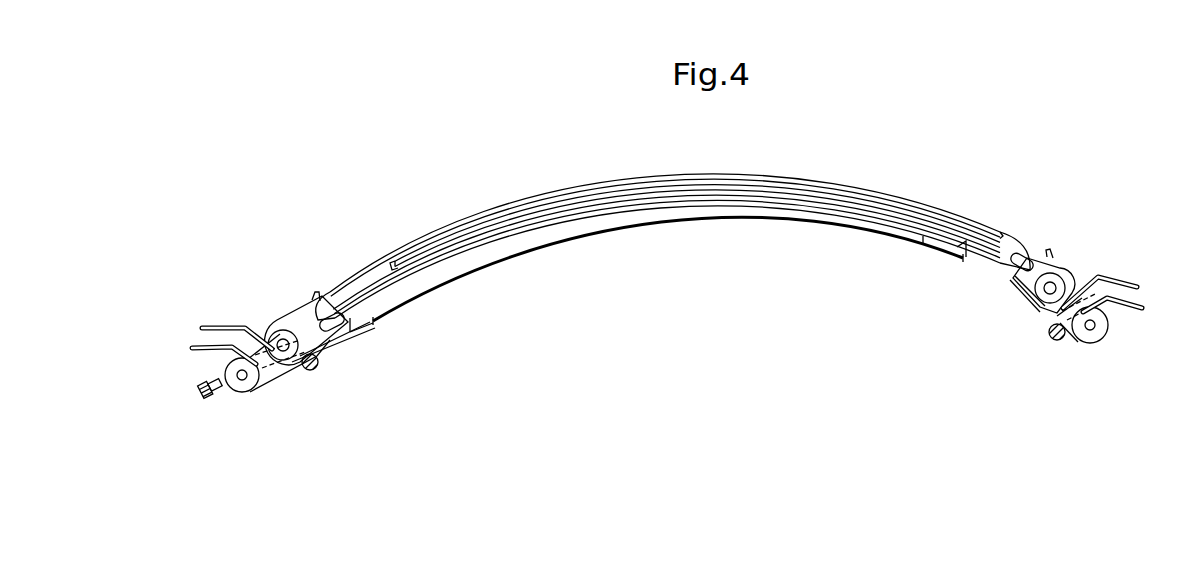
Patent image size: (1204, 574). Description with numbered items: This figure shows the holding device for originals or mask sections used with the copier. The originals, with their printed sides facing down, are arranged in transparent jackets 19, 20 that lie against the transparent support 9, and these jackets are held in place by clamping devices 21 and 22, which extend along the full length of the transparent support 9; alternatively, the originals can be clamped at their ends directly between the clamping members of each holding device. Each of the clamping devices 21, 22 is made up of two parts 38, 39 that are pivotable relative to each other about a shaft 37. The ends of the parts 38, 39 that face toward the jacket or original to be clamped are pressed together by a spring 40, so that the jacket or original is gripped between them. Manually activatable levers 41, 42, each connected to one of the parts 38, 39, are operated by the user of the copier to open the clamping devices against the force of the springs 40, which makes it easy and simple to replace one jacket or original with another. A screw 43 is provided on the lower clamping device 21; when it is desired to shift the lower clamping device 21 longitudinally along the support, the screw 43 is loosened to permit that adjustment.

The transparent support 9 is at (480, 262).
The transparent jacket 19 is at (481, 220).
The transparent jacket 20 is at (930, 236).
The lower clamping device 21 is at (253, 380).
The clamping device 22 is at (1077, 337).
The shaft 37 is at (280, 340).
The clamping part 38 is at (302, 323).
The clamping part 39 is at (333, 333).
The spring 40 is at (317, 304).
The manually activatable lever 41 is at (196, 348).
The manually activatable lever 42 is at (205, 326).
The screw 43 is at (208, 403).